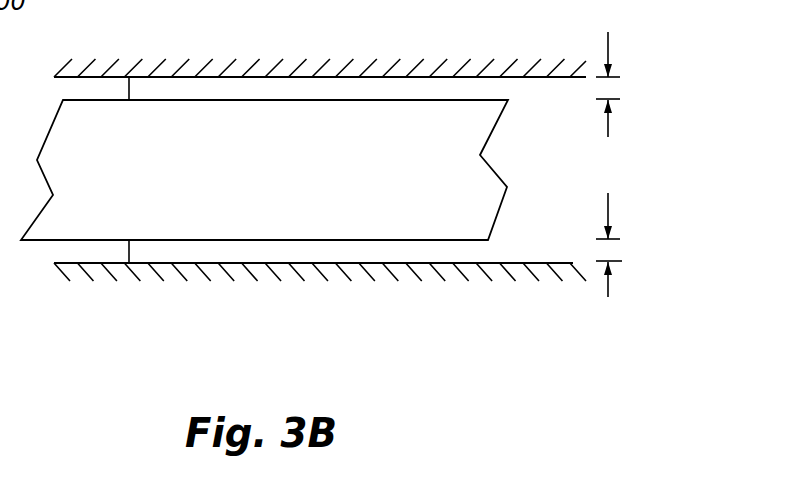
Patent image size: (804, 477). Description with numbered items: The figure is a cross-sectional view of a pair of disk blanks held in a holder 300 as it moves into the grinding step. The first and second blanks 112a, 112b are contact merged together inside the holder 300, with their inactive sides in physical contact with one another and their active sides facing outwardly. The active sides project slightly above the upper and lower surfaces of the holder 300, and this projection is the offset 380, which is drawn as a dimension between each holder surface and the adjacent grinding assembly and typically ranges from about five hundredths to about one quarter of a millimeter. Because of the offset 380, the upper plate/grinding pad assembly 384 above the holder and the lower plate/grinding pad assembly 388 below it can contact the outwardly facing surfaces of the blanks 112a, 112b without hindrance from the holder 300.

The holder 300 is at (264, 170).
The first blank 112a is at (315, 100).
The second blank 112b is at (217, 240).
The upper plate/grinding pad assembly 384 is at (447, 66).
The lower plate/grinding pad assembly 388 is at (458, 272).
The offset 380 is at (612, 88).